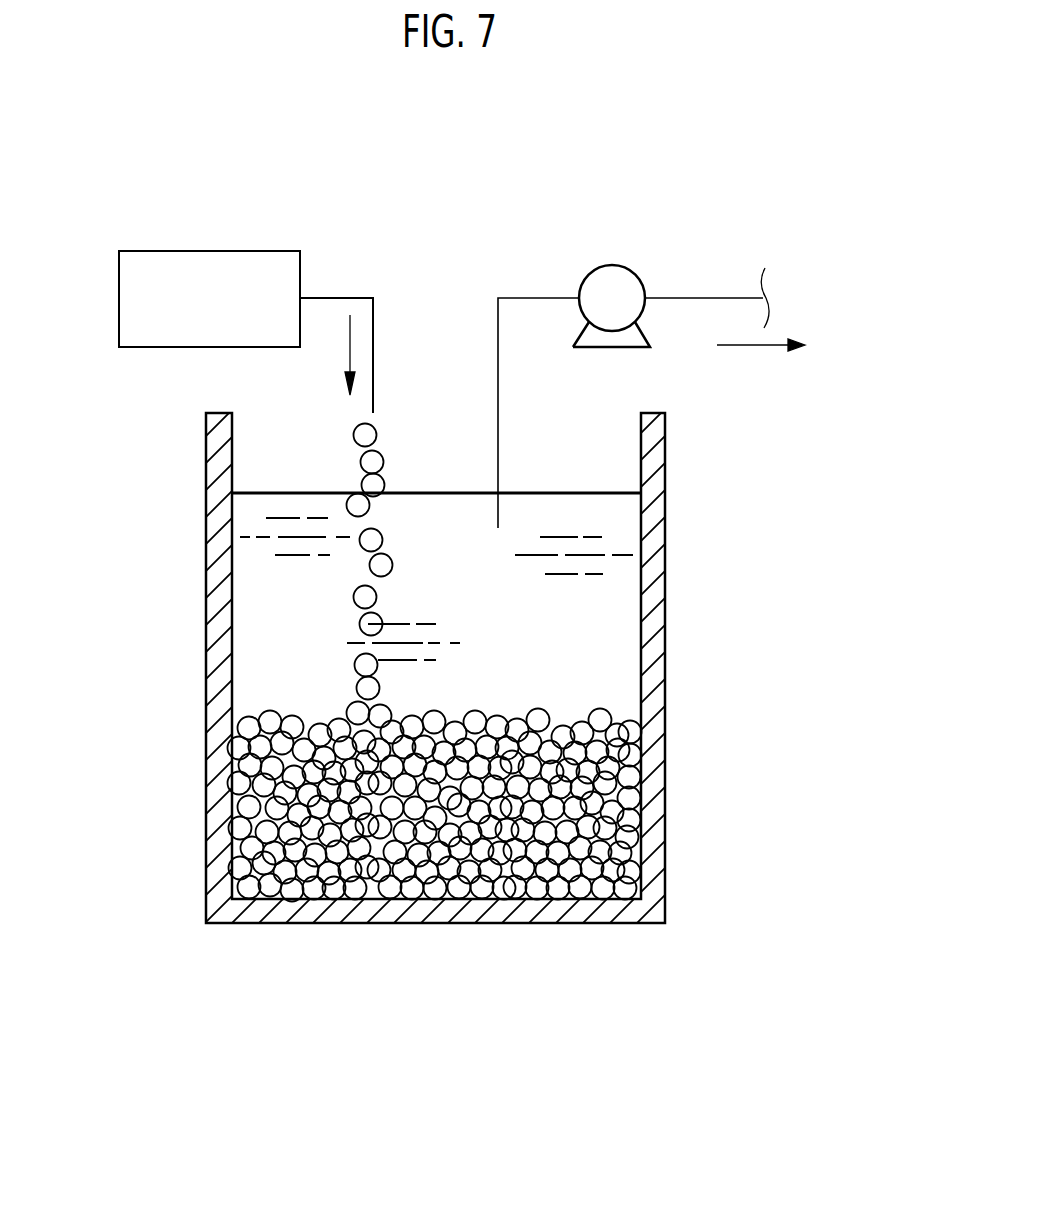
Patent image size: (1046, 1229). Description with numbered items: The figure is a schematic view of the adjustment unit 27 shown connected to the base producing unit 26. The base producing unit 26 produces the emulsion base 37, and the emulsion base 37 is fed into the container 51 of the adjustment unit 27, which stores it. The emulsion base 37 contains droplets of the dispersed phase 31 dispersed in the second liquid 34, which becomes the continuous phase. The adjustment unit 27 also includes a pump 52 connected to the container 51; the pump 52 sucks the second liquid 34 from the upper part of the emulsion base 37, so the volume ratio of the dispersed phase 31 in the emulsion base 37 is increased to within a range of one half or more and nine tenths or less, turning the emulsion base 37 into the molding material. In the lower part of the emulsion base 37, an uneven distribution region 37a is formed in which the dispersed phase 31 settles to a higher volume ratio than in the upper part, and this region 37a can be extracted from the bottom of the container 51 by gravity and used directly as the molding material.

The base producing unit 26 is at (165, 348).
The adjustment unit 27 is at (272, 926).
The dispersed phase 31 is at (358, 600).
The second liquid 34 is at (615, 658).
The emulsion base 37 is at (583, 500).
The uneven distribution region 37a is at (665, 729).
The container 51 is at (645, 552).
The pump 52 is at (635, 273).